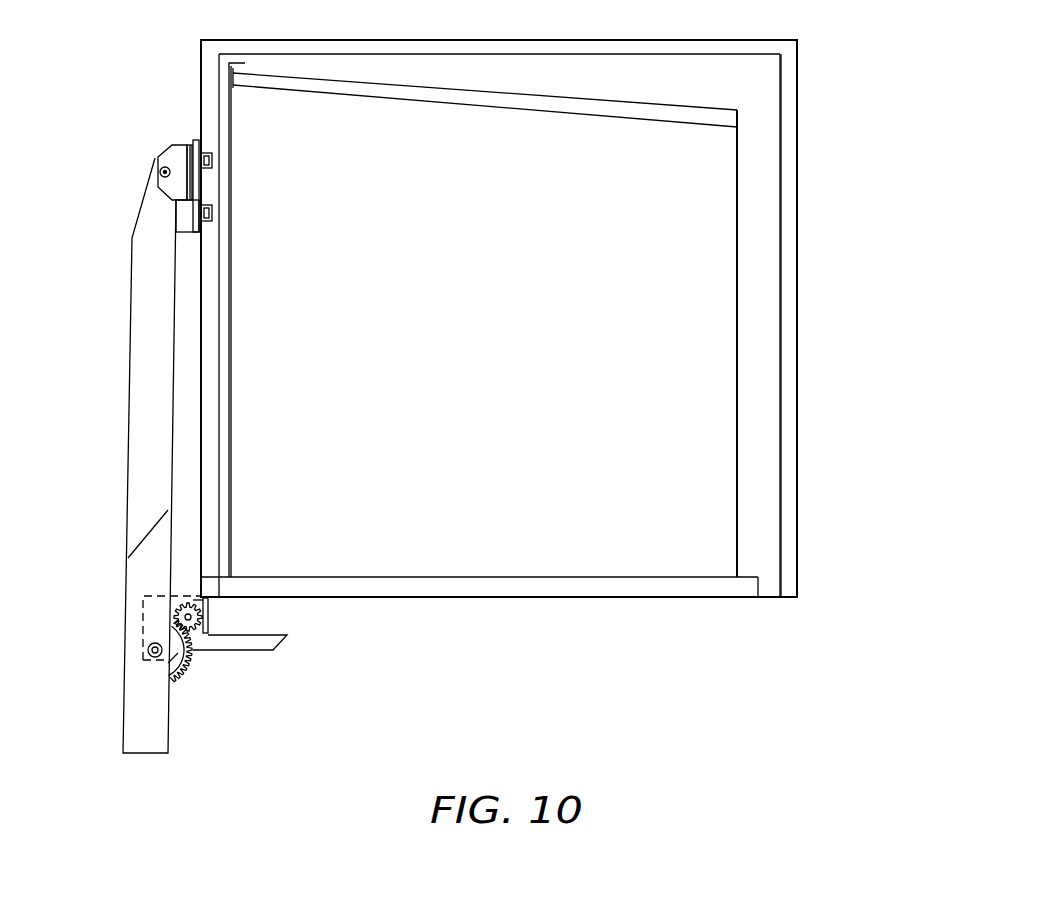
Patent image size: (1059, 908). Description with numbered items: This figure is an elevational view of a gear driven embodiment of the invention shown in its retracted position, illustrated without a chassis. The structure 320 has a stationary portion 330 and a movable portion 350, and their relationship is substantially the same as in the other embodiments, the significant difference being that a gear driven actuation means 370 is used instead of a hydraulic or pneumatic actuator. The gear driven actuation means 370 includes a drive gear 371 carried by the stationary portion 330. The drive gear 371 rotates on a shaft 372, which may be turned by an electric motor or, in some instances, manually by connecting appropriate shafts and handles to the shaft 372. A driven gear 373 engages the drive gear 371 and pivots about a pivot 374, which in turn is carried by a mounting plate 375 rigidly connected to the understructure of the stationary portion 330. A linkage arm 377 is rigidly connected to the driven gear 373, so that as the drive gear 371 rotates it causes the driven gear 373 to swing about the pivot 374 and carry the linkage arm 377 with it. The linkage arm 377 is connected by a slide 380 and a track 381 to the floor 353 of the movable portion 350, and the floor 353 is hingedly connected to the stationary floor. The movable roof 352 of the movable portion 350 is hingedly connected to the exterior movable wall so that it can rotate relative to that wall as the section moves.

The structure 320 is at (567, 318).
The stationary portion 330 is at (558, 322).
The movable portion 350 is at (550, 318).
The movable roof 352 is at (833, 318).
The floor 353 is at (479, 330).
The gear driven actuation means 370 is at (223, 661).
The drive gear 371 is at (247, 582).
The shaft 372 is at (198, 614).
The driven gear 373 is at (216, 691).
The pivot 374 is at (148, 647).
The mounting plate 375 is at (257, 540).
The linkage arm 377 is at (109, 455).
The slide 380 is at (129, 151).
The track 381 is at (192, 177).